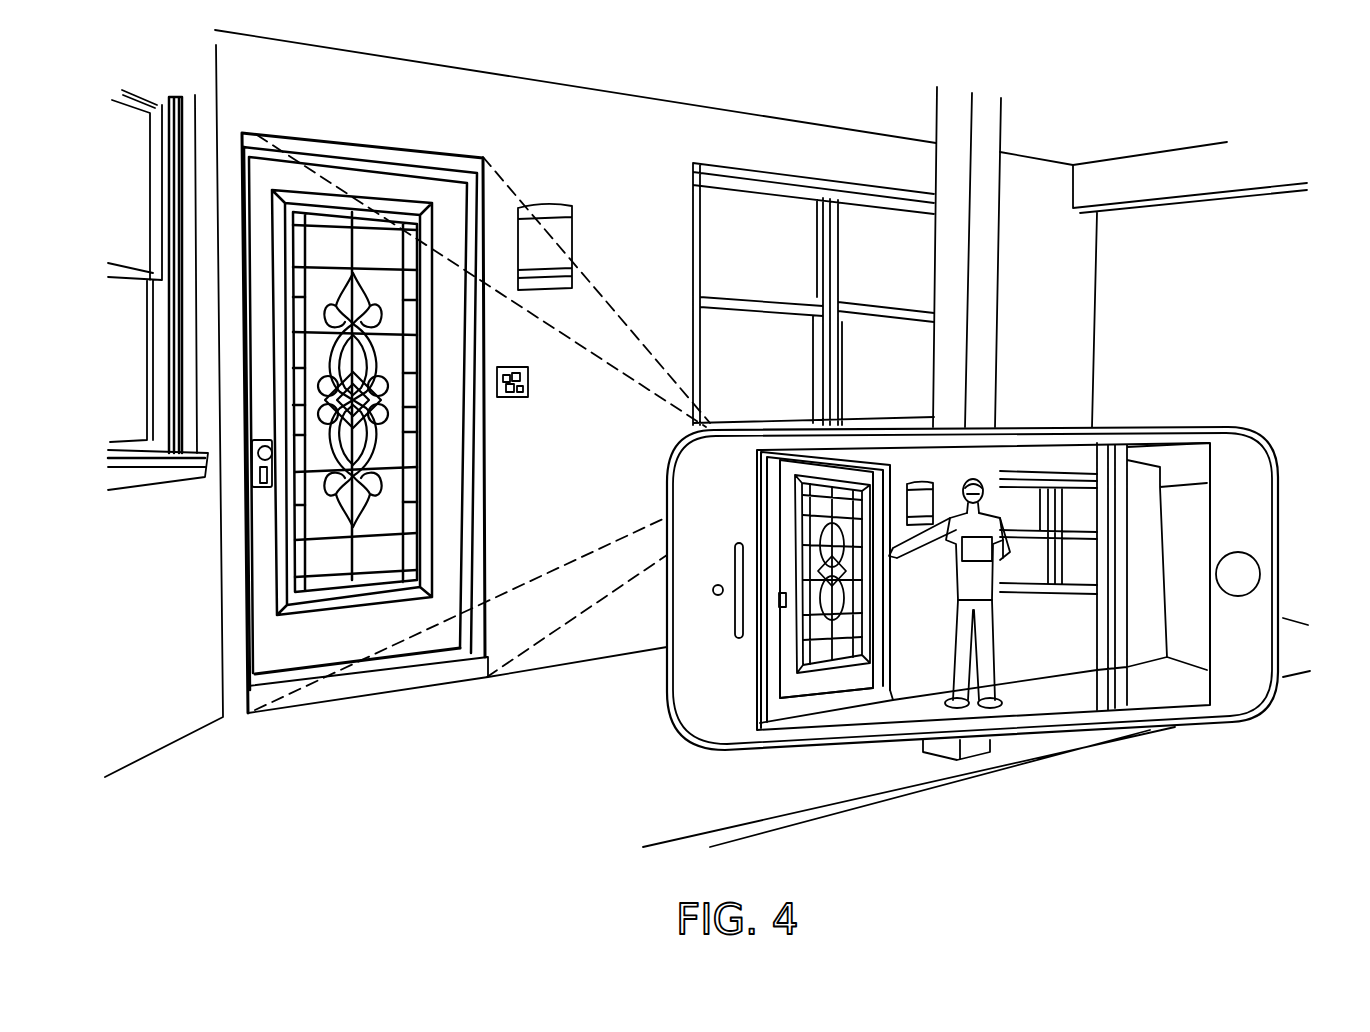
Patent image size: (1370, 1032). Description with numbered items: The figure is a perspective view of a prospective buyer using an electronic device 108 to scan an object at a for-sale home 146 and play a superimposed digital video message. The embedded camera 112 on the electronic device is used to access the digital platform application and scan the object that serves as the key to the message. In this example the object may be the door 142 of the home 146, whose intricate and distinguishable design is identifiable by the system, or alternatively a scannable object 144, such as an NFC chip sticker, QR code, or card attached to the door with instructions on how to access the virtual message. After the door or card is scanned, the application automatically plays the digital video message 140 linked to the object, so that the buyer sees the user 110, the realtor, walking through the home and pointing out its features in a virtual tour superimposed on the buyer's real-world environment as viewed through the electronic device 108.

The electronic device 108 is at (1231, 395).
The user 110 is at (976, 479).
The embedded camera 112 is at (669, 447).
The image 140 is at (1038, 692).
The door 142 is at (345, 138).
The scannable object 144 is at (508, 405).
The home 146 is at (638, 112).